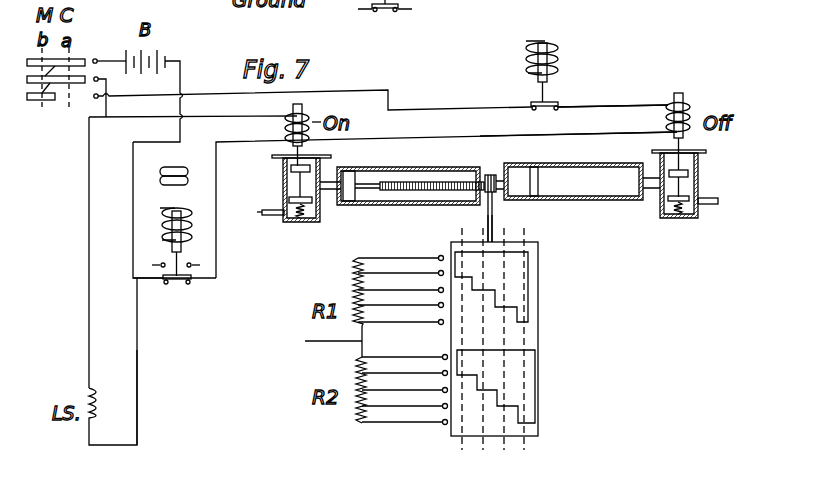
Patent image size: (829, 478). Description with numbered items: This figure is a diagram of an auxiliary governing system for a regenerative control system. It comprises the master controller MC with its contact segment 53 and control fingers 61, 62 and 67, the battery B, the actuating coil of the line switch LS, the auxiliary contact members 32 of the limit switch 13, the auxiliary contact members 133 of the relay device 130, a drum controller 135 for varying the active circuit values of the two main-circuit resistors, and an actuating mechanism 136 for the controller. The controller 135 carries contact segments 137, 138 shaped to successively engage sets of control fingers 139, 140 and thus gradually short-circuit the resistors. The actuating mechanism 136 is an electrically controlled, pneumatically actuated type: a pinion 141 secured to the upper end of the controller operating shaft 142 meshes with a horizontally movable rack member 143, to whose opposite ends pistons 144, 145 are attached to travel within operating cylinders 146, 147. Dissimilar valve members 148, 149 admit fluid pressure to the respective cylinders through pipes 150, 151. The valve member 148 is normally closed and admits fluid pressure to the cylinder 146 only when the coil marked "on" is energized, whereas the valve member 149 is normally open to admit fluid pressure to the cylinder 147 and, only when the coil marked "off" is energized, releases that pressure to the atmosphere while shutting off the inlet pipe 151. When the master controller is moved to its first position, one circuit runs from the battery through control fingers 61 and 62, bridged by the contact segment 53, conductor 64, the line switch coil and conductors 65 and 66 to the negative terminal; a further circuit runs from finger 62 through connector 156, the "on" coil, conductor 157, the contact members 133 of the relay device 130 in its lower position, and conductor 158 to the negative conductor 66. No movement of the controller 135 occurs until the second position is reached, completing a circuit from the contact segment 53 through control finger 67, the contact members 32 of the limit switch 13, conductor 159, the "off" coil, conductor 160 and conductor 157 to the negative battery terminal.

The limit switch 13 is at (556, 71).
The contact members 32 is at (458, 67).
The commutator segments 53 is at (27, 64).
The control finger 61 is at (109, 51).
The control finger 62 is at (108, 89).
The conductor 64 is at (89, 163).
The conductor 65 is at (137, 410).
The conductor 66 is at (133, 235).
The control finger 67 is at (370, 103).
The relay device 130 is at (190, 242).
The auxiliary contact members 133 is at (176, 279).
The drum controller 135 is at (532, 339).
The actuating mechanism 136 is at (486, 176).
The contact segment 137 is at (528, 279).
The contact segment 138 is at (535, 391).
The control fingers 139 is at (455, 310).
The control fingers 140 is at (448, 421).
The pinion 141 is at (490, 177).
The controller operating shaft 142 is at (494, 214).
The rack member 143 is at (437, 193).
The piston 144 is at (358, 167).
The piston 145 is at (540, 167).
The operating cylinder 146 is at (418, 167).
The operating cylinder 147 is at (595, 167).
The valve member 148 is at (284, 190).
The valve member 149 is at (699, 176).
The pipe 150 is at (267, 217).
The inlet pipe 151 is at (708, 206).
The connector 156 is at (157, 119).
The conductor 157 is at (216, 158).
The conductor 158 is at (154, 279).
The conductor 159 is at (643, 105).
The conductor 160 is at (615, 134).